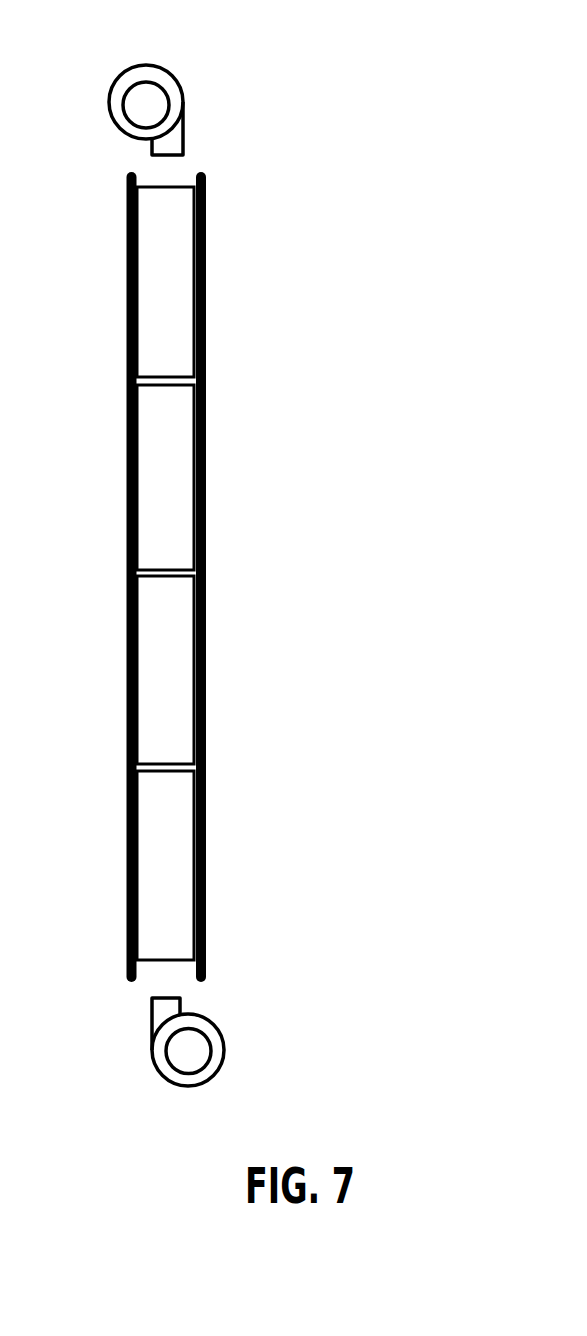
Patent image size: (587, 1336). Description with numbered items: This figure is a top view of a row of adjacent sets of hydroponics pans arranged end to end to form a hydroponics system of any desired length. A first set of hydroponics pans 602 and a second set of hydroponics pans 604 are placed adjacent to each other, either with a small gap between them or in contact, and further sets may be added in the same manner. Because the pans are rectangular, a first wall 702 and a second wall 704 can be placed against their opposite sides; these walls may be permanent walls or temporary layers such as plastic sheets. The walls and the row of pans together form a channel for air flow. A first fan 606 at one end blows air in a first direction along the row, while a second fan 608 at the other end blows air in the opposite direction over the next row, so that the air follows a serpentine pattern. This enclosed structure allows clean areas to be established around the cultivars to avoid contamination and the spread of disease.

The first set of hydroponics pans 602 is at (165, 865).
The second set of hydroponics pans 604 is at (165, 670).
The first fan 606 is at (110, 115).
The second fan 608 is at (150, 1037).
The first wall 702 is at (123, 883).
The second wall 704 is at (205, 868).